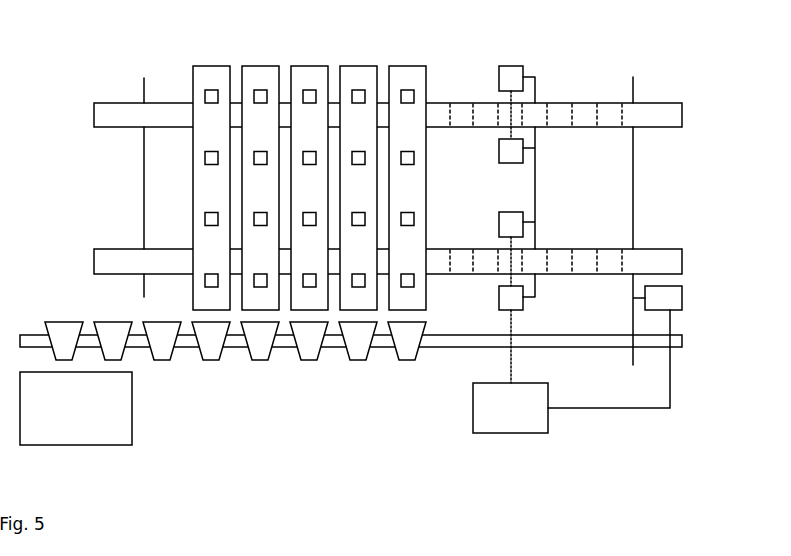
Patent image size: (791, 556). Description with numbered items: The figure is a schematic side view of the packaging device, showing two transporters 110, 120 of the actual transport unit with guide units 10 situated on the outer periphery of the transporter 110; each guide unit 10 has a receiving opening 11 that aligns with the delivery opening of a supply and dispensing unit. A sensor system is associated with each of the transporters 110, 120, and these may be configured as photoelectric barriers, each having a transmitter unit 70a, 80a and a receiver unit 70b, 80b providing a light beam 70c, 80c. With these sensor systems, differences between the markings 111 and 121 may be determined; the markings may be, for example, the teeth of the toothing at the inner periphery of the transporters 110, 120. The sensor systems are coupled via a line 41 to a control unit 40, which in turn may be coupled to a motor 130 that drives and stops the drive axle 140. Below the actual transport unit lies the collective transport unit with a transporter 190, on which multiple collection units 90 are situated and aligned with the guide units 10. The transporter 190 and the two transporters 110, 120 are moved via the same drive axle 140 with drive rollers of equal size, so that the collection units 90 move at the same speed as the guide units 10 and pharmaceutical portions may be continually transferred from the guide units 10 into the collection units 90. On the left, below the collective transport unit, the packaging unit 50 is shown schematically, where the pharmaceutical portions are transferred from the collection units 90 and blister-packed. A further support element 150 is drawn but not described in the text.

The guide unit 10 is at (218, 78).
The receiving opening 11 is at (210, 96).
The control unit 40 is at (512, 408).
The line 41 is at (537, 138).
The packaging unit 50 is at (70, 420).
The transmitter unit 70a is at (510, 77).
The receiver unit 70b is at (512, 152).
The light beam 70c is at (508, 115).
The transmitter unit 80a is at (512, 225).
The receiver unit 80b is at (511, 297).
The light beam 80c is at (508, 262).
The collection unit 90 is at (407, 345).
The transporter 110 is at (107, 115).
The markings 111 is at (450, 118).
The transporter 120 is at (670, 261).
The markings 121 is at (597, 262).
The motor 130 is at (670, 298).
The drive axle 140 is at (633, 90).
The support post 150 is at (144, 88).
The transporter 190 is at (670, 339).